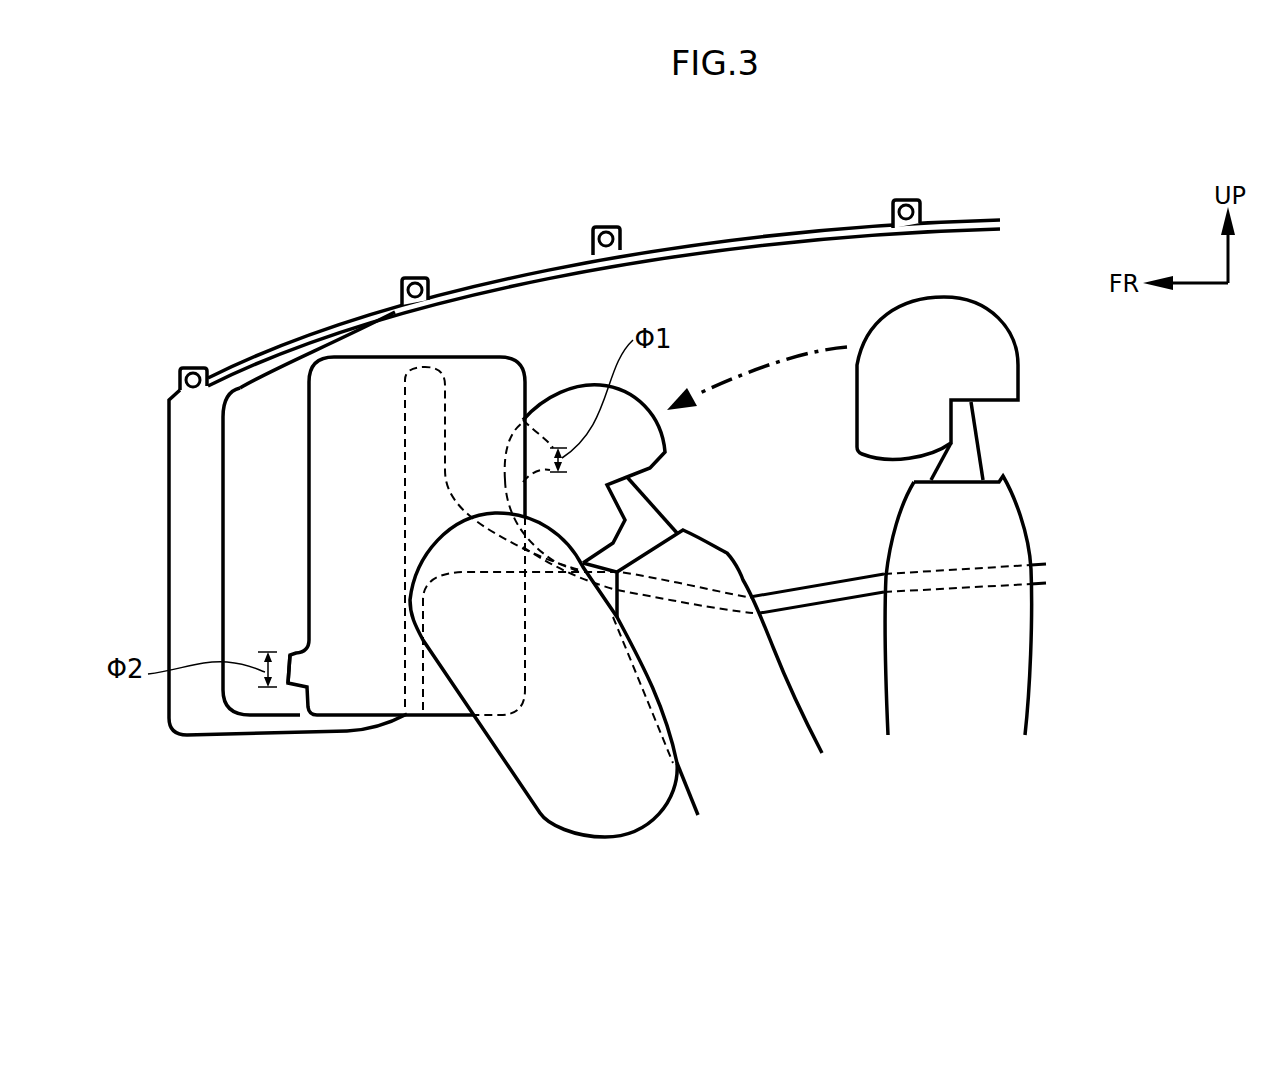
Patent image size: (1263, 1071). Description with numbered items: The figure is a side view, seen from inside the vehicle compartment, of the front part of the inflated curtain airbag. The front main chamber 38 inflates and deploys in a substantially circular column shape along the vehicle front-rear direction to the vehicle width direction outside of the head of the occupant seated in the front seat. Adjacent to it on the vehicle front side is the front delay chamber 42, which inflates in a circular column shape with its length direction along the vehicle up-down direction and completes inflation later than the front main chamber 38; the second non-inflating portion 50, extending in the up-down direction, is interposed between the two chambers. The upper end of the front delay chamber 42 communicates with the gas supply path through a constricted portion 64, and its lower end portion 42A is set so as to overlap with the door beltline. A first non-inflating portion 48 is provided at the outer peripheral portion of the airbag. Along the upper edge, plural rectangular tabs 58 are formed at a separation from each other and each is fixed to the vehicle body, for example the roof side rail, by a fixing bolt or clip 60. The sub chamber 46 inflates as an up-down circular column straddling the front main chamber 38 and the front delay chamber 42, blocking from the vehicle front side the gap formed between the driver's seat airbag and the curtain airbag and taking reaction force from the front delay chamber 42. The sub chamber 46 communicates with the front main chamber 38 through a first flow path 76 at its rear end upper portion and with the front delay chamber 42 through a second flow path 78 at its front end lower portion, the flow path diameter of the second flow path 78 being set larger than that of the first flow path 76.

The front main chamber 38 is at (723, 283).
The front delay chamber 42 is at (250, 520).
The lower end portion of the front delay chamber 42A is at (295, 703).
The sub chamber 46 is at (347, 387).
The first non-inflating portion 48 is at (830, 593).
The second non-inflating portion 50 is at (430, 415).
The tabs 58 is at (186, 368).
The fixing bolt or clip 60 is at (200, 375).
The constricted portion 64 is at (420, 338).
The first flow path 76 is at (550, 440).
The second flow path 78 is at (287, 667).